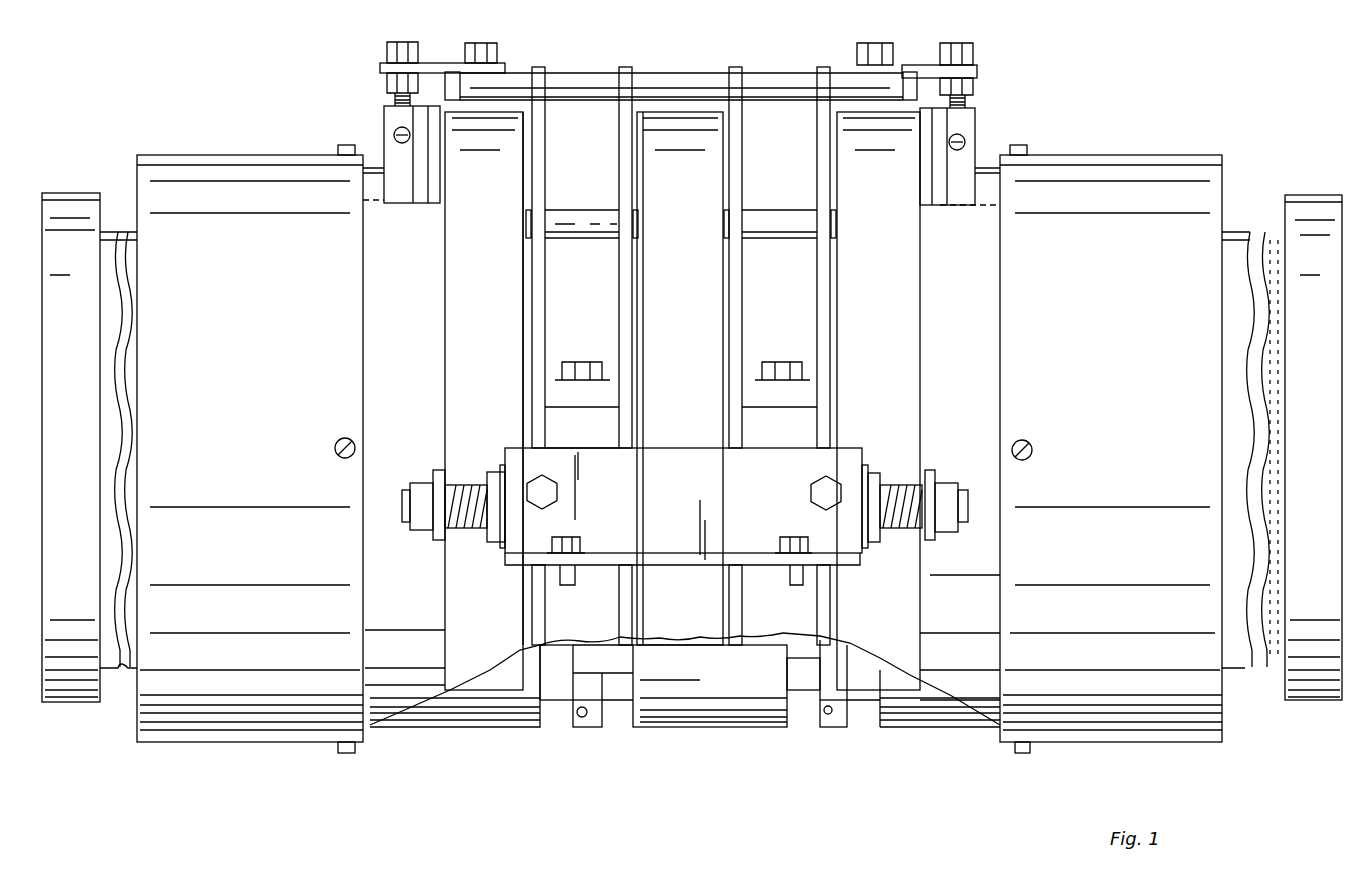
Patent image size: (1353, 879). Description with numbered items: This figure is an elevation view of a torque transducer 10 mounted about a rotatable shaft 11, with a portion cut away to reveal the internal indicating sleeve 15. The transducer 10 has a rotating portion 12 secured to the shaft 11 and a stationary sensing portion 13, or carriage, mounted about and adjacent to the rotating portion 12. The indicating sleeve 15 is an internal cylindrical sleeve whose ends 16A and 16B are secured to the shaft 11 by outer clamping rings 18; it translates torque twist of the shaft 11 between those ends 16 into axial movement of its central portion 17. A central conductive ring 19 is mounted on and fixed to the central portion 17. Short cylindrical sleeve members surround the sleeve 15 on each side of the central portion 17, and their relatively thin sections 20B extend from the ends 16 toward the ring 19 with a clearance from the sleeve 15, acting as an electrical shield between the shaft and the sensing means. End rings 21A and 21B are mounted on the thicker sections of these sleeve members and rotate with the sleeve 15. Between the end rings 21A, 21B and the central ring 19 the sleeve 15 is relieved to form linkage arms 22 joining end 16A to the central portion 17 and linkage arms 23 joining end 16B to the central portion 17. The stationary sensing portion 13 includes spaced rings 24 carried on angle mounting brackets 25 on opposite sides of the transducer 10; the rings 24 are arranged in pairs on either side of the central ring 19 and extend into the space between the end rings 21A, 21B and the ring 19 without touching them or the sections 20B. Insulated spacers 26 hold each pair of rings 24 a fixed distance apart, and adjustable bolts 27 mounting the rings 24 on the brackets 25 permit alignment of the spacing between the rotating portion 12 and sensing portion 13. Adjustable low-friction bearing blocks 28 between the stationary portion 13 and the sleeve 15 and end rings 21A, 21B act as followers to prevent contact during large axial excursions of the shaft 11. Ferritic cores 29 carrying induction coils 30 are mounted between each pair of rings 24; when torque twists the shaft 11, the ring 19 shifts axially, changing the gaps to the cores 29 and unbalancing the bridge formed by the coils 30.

The torque transducer 10 is at (784, 38).
The rotatable shaft 11 is at (117, 232).
The rotating portion 12 is at (971, 764).
The stationary sensing portion 13 is at (608, 302).
The indicating sleeve 15 is at (885, 392).
The sleeve ends 16 is at (418, 578).
The sleeve end 16A is at (468, 720).
The sleeve end 16B is at (906, 720).
The central portion 17 is at (738, 712).
The outer clamping ring 18 is at (238, 155).
The central conductive ring 19 is at (668, 120).
The thin section 20B is at (602, 340).
The end ring 21A is at (493, 112).
The end ring 21B is at (880, 108).
The linkage arms 22 is at (585, 722).
The linkage arms 23 is at (832, 722).
The spaced rings 24 is at (537, 67).
The angle mounting bracket 25 is at (695, 503).
The insulated spacer 26 is at (590, 80).
The adjustable bolt 27 is at (455, 480).
The adjustable bearing block 28 is at (384, 120).
The ferritic core 29 is at (727, 223).
The induction coil 30 is at (562, 240).